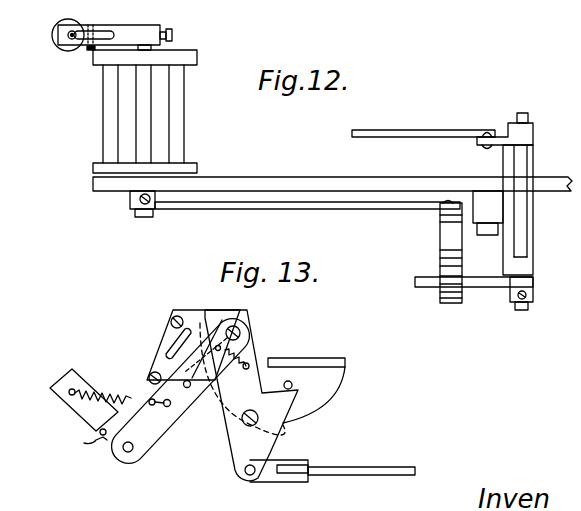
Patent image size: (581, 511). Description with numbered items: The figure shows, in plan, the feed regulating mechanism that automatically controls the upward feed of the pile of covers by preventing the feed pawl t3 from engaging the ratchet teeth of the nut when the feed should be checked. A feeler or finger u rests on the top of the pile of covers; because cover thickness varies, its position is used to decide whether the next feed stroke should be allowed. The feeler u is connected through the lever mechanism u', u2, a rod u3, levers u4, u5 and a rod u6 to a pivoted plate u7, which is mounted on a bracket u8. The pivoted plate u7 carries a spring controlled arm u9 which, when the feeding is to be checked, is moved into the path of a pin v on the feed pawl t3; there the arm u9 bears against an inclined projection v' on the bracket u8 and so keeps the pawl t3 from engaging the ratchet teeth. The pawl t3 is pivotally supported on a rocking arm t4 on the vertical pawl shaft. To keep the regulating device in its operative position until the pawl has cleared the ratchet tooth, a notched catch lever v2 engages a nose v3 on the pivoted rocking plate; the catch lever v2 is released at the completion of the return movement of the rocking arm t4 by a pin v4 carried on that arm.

In FIG. 12, the feeler or finger u is at (83, 51).
In FIG. 12, the lever mechanism u' is at (133, 36).
In FIG. 12, the lever mechanism u2 is at (302, 207).
In FIG. 12, the rod u3 is at (446, 243).
In FIG. 12, the lever u4 is at (485, 284).
In FIG. 12, the lever u5 is at (503, 136).
In FIG. 12, the rod u6 is at (422, 121).
In FIG. 13, the rod u6 is at (379, 466).
In FIG. 13, the pivoted plate u7 is at (258, 442).
In FIG. 13, the bracket u8 is at (327, 373).
In FIG. 13, the spring controlled arm u9 is at (238, 345).
In FIG. 13, the pin v is at (190, 408).
In FIG. 13, the inclined projection v' is at (137, 360).
In FIG. 13, the notched catch lever v2 is at (167, 360).
In FIG. 13, the nose v3 is at (216, 333).
In FIG. 13, the pin v4 is at (103, 439).
In FIG. 13, the feed pawl t3 is at (147, 433).
In FIG. 13, the arm t4 is at (92, 422).